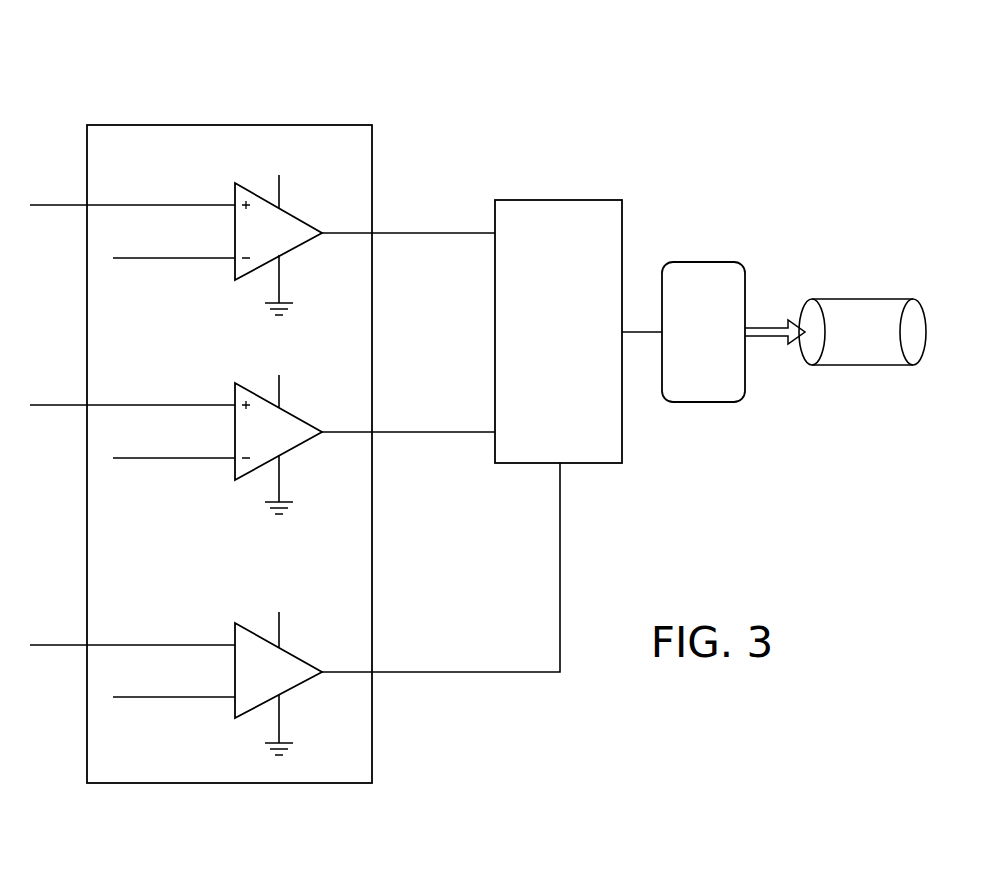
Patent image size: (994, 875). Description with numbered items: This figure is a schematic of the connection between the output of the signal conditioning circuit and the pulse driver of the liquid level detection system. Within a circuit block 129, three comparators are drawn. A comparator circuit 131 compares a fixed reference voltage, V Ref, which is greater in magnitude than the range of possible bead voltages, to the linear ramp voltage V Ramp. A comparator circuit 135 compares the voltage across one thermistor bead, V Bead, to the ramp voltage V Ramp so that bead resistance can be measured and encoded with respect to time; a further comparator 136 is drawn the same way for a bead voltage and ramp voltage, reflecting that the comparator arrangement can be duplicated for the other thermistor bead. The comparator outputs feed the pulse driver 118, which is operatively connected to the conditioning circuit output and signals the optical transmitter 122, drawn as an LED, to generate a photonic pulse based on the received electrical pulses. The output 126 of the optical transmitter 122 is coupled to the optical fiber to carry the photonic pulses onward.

The pulse driver 118 is at (558, 200).
The optical transmitter 122 is at (705, 262).
The output of the optical transmitter 126 is at (765, 327).
The comparator circuit block 129 is at (133, 125).
The comparator circuit 131 is at (258, 148).
The comparator circuit 135 is at (246, 493).
The third comparator 136 is at (223, 744).